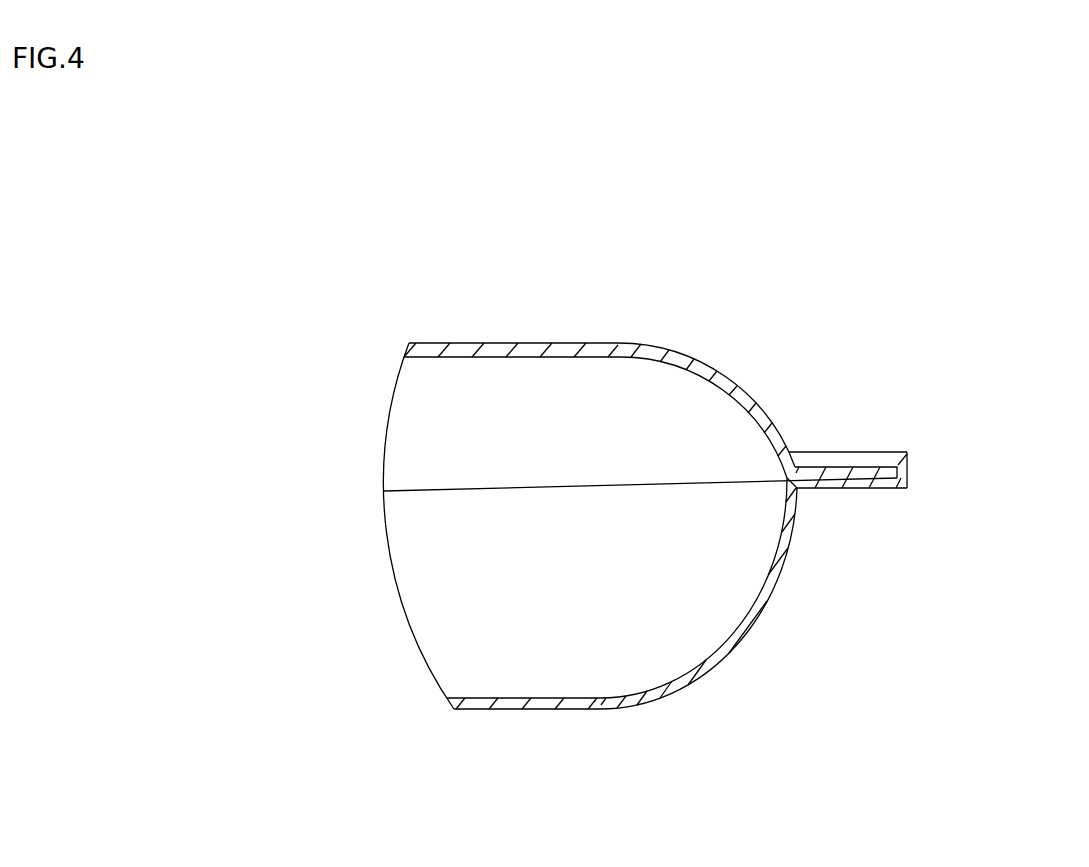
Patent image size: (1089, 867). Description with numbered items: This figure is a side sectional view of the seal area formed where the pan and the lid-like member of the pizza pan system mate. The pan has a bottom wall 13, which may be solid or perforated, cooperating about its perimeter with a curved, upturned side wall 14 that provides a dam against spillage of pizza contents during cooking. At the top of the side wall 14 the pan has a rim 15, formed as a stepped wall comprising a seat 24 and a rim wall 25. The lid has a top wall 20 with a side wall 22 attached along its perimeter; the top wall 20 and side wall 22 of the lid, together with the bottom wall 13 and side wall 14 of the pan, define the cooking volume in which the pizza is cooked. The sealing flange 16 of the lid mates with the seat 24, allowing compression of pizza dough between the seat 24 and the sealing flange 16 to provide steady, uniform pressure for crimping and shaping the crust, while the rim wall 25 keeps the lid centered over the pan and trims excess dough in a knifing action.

The bottom wall 13 is at (523, 711).
The side wall 14 is at (748, 631).
The rim 15 is at (917, 497).
The sealing flange 16 is at (860, 465).
The top wall 20 is at (543, 340).
The side wall 22 is at (736, 386).
The seat 24 is at (840, 492).
The rim wall 25 is at (913, 466).